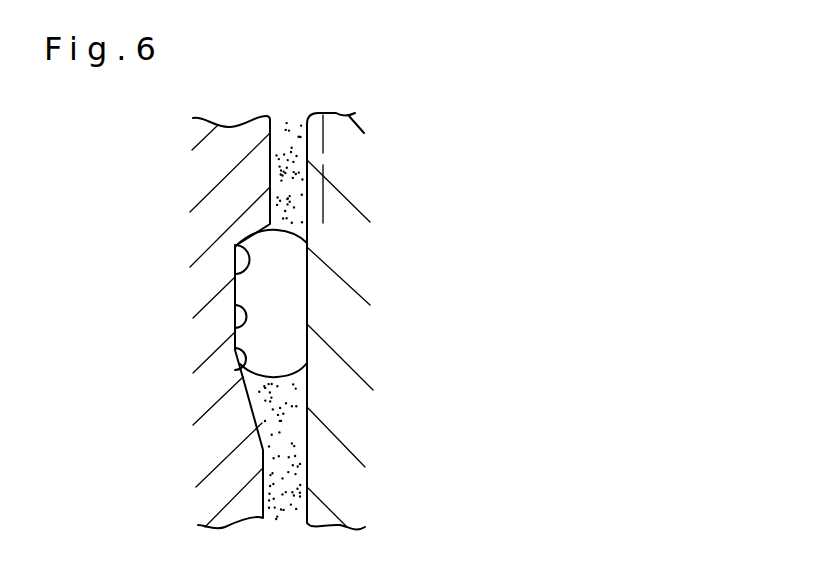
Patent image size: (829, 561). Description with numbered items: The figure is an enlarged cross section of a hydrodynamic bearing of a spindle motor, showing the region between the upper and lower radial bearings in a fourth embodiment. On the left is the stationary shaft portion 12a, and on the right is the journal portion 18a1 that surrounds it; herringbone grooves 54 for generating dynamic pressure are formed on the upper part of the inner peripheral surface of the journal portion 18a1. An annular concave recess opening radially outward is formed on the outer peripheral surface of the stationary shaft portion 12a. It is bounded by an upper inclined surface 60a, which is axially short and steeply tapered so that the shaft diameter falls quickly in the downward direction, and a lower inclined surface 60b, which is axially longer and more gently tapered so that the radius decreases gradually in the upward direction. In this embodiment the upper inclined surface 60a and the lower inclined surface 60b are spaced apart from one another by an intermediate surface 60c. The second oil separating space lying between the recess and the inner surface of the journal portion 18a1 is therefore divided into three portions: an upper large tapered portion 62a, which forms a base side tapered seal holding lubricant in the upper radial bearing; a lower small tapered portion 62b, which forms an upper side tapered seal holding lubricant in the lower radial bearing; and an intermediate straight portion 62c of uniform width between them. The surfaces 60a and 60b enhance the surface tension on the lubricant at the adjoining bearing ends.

The stationary shaft portion 12a is at (242, 135).
The herringbone grooves 54 is at (337, 128).
The journal portion 18a1 is at (343, 512).
The upper inclined surface 60a is at (233, 275).
The lower inclined surface 60b is at (233, 328).
The intermediate surface 60c is at (240, 353).
The upper large tapered portion 62a is at (290, 248).
The lower small tapered portion 62b is at (276, 360).
The intermediate straight portion 62c is at (284, 298).